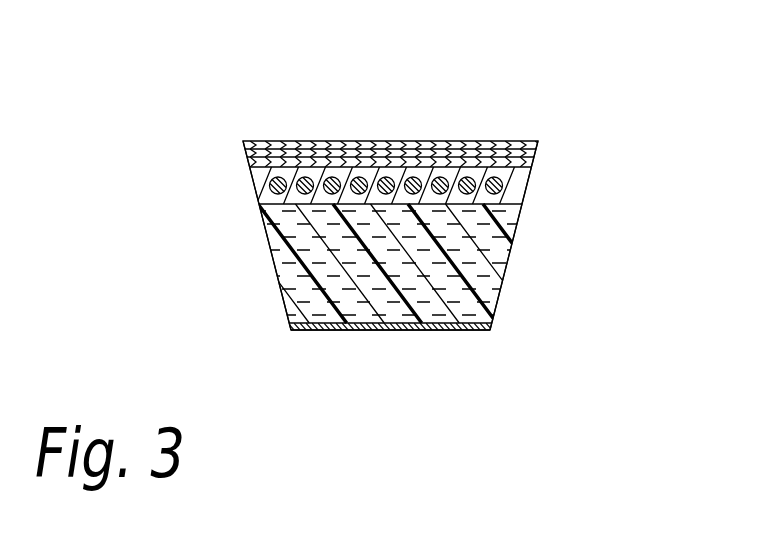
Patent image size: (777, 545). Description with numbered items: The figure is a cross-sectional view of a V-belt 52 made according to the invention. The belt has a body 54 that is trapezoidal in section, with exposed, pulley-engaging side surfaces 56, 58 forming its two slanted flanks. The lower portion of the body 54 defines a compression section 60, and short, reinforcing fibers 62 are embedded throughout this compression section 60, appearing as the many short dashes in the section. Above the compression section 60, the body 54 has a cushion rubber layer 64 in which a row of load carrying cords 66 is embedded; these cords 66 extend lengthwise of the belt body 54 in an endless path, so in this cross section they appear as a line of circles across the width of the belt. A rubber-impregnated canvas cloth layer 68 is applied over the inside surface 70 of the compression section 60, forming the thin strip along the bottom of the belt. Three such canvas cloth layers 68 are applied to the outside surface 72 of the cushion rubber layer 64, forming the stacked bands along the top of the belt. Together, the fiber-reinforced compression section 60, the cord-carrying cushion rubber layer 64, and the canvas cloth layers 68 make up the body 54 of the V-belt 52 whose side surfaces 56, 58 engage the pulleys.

The V-belt 52 is at (538, 90).
The body 54 is at (520, 218).
The pulley-engaging side surface 56 is at (267, 238).
The pulley-engaging side surface 58 is at (510, 255).
The compression section 60 is at (278, 263).
The short reinforcing fibers 62 is at (346, 270).
The cushion rubber layer 64 is at (244, 176).
The load carrying cords 66 is at (337, 183).
The rubber-impregnated canvas cloth layer 68 is at (247, 163).
The inside surface 70 is at (448, 331).
The outside surface 72 is at (447, 183).